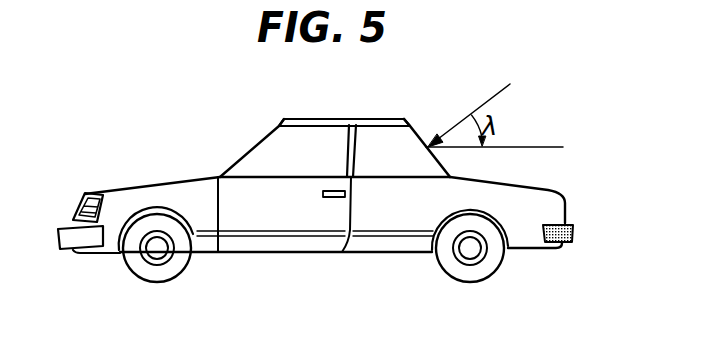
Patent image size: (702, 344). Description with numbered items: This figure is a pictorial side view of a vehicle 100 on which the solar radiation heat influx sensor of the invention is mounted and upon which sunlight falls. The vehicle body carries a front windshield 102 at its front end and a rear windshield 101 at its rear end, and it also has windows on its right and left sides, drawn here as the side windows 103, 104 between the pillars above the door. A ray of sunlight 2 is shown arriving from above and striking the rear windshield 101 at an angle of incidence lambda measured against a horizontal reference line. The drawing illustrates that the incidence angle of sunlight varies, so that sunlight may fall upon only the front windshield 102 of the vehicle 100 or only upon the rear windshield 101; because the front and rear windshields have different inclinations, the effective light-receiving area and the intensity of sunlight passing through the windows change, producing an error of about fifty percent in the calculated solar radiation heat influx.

The vehicle 100 is at (96, 194).
The rear windshield 101 is at (446, 168).
The front windshield 102 is at (240, 160).
The front door window glass 103 is at (315, 145).
The rear side window glass 104 is at (383, 145).
The incident light ray 2 is at (492, 97).